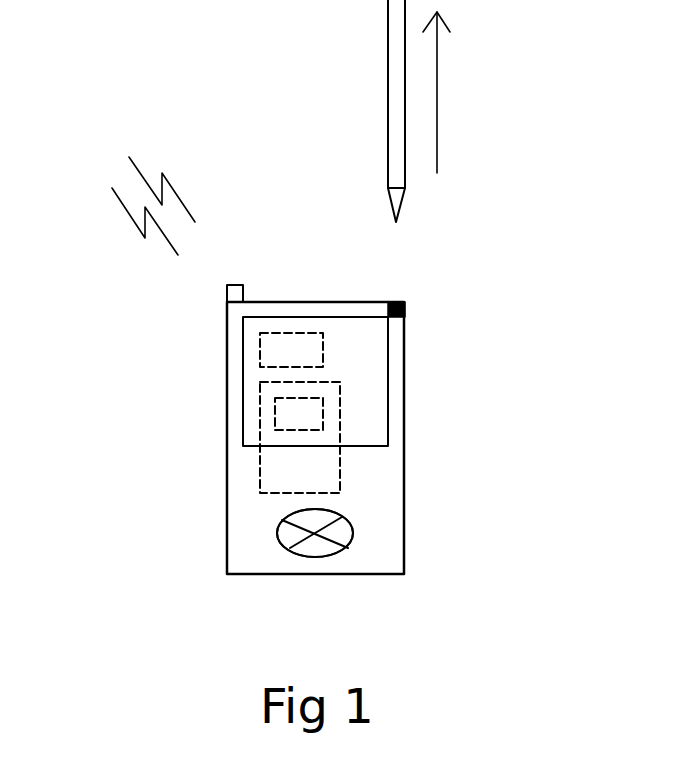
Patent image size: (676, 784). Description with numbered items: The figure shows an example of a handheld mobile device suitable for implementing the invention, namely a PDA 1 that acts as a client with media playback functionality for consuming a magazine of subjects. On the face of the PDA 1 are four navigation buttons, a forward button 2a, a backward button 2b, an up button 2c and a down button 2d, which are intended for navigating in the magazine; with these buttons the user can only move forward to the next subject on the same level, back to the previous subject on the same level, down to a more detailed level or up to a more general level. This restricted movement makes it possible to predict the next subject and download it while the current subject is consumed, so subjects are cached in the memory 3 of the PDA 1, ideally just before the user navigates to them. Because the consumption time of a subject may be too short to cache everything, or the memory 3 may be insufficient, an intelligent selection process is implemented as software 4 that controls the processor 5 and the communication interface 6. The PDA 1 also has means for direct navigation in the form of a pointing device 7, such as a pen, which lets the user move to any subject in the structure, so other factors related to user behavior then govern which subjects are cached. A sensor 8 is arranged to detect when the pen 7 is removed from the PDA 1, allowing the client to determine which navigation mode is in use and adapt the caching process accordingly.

The PDA 1 is at (227, 542).
The forward button 2a is at (343, 516).
The backward button 2b is at (288, 548).
The up button 2c is at (333, 511).
The down button 2d is at (320, 556).
The memory 3 is at (260, 482).
The software 4 is at (277, 418).
The processor 5 is at (260, 350).
The communication interface 6 is at (227, 290).
The pointing device 7 is at (388, 62).
The sensor 8 is at (405, 318).